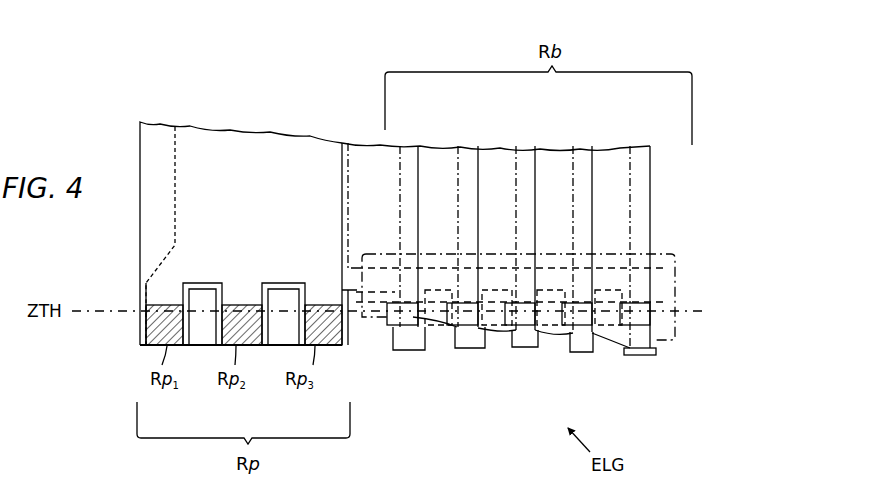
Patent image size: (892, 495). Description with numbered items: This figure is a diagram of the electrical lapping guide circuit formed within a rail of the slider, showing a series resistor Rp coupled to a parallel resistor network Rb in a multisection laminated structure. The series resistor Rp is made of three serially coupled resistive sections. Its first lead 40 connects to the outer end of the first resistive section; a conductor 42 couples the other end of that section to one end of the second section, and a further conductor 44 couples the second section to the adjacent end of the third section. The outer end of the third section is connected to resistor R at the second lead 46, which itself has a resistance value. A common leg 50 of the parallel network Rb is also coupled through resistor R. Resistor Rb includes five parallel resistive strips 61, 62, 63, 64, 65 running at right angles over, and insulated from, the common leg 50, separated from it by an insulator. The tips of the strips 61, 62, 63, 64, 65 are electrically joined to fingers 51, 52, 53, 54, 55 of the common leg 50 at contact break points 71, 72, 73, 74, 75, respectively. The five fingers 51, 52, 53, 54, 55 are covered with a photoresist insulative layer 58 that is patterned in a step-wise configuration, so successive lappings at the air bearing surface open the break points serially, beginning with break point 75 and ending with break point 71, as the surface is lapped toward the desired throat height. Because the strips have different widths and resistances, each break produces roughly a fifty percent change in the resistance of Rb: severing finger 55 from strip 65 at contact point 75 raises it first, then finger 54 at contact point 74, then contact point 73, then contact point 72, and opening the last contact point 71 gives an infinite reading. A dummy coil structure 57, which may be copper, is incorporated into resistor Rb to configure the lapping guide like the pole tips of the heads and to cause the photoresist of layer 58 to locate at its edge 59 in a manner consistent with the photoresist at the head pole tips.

The first lead 40 is at (158, 132).
The conductor 42 is at (203, 284).
The conductor 44 is at (278, 284).
The second lead 46 is at (343, 140).
The common leg 50 is at (357, 292).
The finger 51 is at (418, 340).
The finger 52 is at (470, 340).
The finger 53 is at (519, 345).
The finger 54 is at (578, 352).
The finger 55 is at (640, 356).
The dummy coil structure 57 is at (607, 305).
The photoresist insulative layer 58 is at (660, 310).
The edge 59 is at (617, 353).
The resistive strip 61 is at (410, 150).
The resistive strip 62 is at (467, 150).
The resistive strip 63 is at (524, 150).
The resistive strip 64 is at (581, 150).
The resistive strip 65 is at (640, 150).
The contact break point 71 is at (393, 330).
The contact break point 72 is at (450, 340).
The contact break point 73 is at (505, 345).
The contact break point 74 is at (561, 350).
The contact break point 75 is at (656, 355).